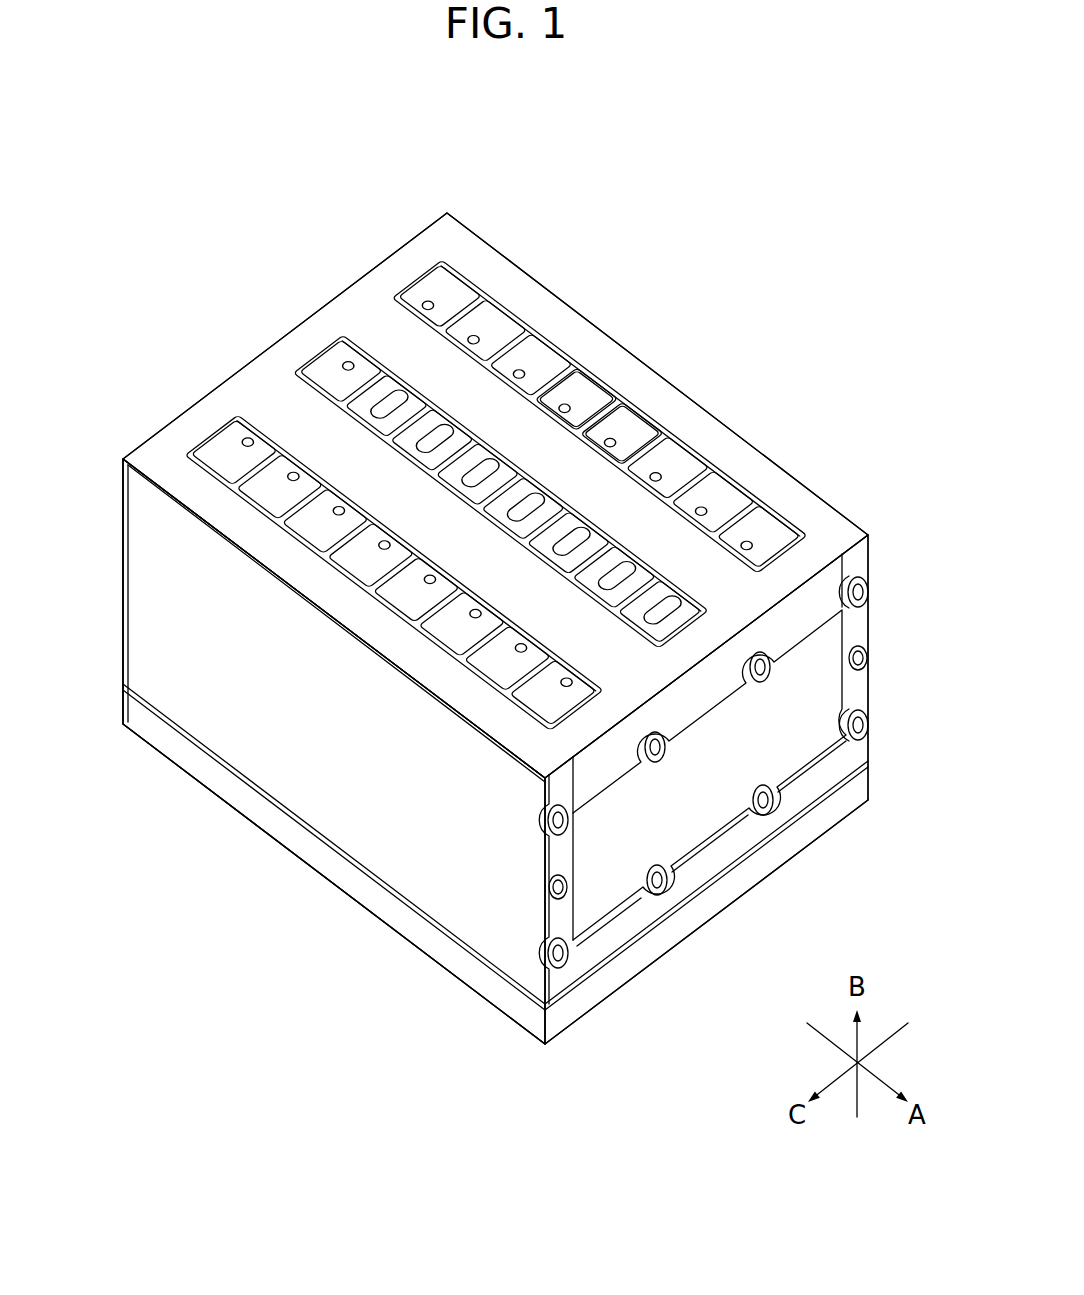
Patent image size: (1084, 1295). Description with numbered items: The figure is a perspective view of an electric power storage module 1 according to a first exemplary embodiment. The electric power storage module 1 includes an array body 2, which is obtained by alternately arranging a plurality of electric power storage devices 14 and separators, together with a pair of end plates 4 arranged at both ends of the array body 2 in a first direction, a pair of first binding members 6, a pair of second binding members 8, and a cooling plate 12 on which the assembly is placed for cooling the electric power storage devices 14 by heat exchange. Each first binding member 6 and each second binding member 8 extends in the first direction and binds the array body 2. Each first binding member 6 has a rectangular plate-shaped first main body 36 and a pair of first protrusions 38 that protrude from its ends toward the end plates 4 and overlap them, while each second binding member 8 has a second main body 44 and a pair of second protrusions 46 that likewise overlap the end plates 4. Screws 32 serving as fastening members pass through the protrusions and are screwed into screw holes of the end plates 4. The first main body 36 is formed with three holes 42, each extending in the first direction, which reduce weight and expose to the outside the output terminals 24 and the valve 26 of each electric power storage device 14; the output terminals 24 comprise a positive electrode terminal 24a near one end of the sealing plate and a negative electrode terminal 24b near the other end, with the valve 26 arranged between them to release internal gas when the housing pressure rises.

The electric power storage module 1 is at (531, 1179).
The array body 2 is at (607, 405).
The end plate 4 is at (705, 797).
The first binding member 6 is at (875, 553).
The second binding member 8 is at (876, 644).
The cooling plate 12 is at (830, 827).
The electric power storage device 14 is at (645, 416).
The output terminal 24 is at (468, 438).
The positive electrode terminal 24a is at (440, 292).
The negative electrode terminal 24b is at (228, 450).
The valve 26 is at (325, 370).
The screw 32 is at (871, 700).
The first main body 36 is at (766, 453).
The first protrusion 38 is at (122, 484).
The hole 42 is at (332, 378).
The second main body 44 is at (480, 918).
The second protrusion 46 is at (562, 915).